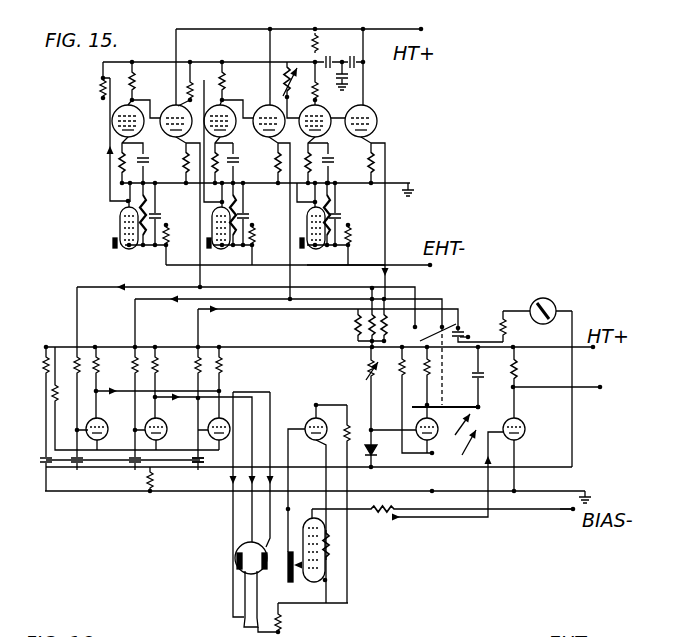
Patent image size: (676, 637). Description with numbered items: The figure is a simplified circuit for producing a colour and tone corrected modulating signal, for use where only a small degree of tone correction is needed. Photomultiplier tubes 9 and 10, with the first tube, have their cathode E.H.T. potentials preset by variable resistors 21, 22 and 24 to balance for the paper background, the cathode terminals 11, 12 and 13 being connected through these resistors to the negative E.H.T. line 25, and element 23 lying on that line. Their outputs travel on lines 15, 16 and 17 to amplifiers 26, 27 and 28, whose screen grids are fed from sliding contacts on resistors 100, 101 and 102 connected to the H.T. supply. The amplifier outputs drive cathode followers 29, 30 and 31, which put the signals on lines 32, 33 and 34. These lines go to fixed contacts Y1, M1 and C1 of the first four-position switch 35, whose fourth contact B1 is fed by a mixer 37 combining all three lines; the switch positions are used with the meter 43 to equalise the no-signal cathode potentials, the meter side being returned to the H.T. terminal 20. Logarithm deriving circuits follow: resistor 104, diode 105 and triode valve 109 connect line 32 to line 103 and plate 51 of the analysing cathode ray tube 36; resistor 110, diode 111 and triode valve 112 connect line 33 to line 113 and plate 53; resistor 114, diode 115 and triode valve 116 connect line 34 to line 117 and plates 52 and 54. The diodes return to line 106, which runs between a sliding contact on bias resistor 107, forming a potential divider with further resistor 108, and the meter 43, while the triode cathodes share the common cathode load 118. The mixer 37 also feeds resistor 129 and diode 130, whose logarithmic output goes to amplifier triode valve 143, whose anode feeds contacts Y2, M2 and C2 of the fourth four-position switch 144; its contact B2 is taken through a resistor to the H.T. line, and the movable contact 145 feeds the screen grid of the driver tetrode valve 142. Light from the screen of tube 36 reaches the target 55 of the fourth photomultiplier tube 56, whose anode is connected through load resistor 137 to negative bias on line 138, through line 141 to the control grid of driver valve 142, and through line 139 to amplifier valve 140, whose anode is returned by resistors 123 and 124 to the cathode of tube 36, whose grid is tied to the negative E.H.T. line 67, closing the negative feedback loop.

The resistor 100 is at (103, 78).
The resistor 101 is at (187, 74).
The resistor 102 is at (295, 43).
The amplifier 26 is at (112, 113).
The cathode follower 29 is at (173, 107).
The cathode follower 30 is at (258, 108).
The cathode follower 31 is at (358, 106).
The amplifier 27 is at (236, 156).
The amplifier 28 is at (331, 156).
The line 15 is at (110, 170).
The line 16 is at (203, 197).
The line 17 is at (290, 197).
The second photomultiplier tube 9 is at (210, 222).
The third photomultiplier tube 10 is at (306, 222).
The variable resistor 21 is at (168, 243).
The variable resistor 22 is at (254, 246).
The variable resistor 24 is at (351, 242).
The terminal 11 is at (115, 248).
The terminal 12 is at (209, 248).
The terminal 13 is at (302, 248).
The line 32 is at (126, 249).
The line 34 is at (262, 267).
The lead 23 is at (328, 262).
The EHT negative line 25 is at (413, 267).
The line 33 is at (162, 297).
The further resistor 108 is at (50, 343).
The bias resistor 107 is at (50, 478).
The resistor 104 is at (85, 343).
The line 103 is at (201, 441).
The resistor 110 is at (121, 384).
The resistor 114 is at (197, 363).
The line 113 is at (250, 517).
The triode valve 116 is at (222, 405).
The amplifier triode valve 109 is at (108, 419).
The triode valve 112 is at (170, 419).
The diode 111 is at (132, 460).
The diode 115 is at (196, 460).
The diode 105 is at (309, 480).
The line 106 is at (117, 468).
The common cathode load 118 is at (154, 481).
The line 117 is at (233, 525).
The mixer 37 is at (340, 329).
The fixed contact Y1 is at (430, 332).
The fixed contact M1 is at (447, 324).
The fixed contact C1 is at (462, 326).
The fourth fixed contact B1 is at (480, 332).
The first manually-operable four-position switch 35 is at (496, 306).
The meter 43 is at (558, 303).
The supply line 20 is at (583, 387).
The driver valve 142 is at (525, 425).
The amplifier triode valve 143 is at (419, 401).
The resistor 129 is at (391, 396).
The diode 130 is at (377, 456).
The resistor 123 is at (348, 420).
The amplifier valve 140 is at (312, 400).
The line 139 is at (287, 447).
The fixed contact M2 is at (458, 376).
The fixed contact Y2 is at (445, 395).
The fixed contact C2 is at (489, 378).
The fourth fixed contact B2 is at (494, 405).
The fourth four-position switch 144 is at (458, 431).
The movable contact 145 is at (470, 447).
The load resistor 137 is at (372, 515).
The line 141 is at (440, 520).
The line 138 is at (532, 514).
The plate 53 is at (236, 548).
The plate 52 is at (240, 566).
The plate 51 is at (267, 554).
The plate 54 is at (243, 578).
The analysing cathode ray tube 36 is at (243, 598).
The target plate 55 is at (289, 570).
The fourth photomultiplier tube 56 is at (310, 558).
The resistor 124 is at (299, 620).
The line 67 is at (342, 620).